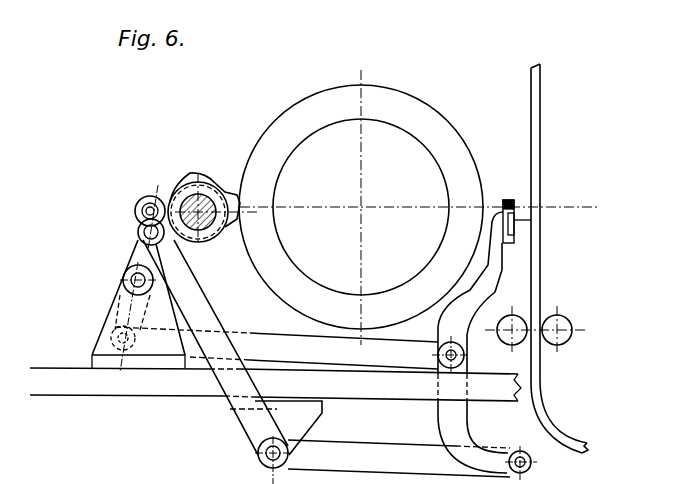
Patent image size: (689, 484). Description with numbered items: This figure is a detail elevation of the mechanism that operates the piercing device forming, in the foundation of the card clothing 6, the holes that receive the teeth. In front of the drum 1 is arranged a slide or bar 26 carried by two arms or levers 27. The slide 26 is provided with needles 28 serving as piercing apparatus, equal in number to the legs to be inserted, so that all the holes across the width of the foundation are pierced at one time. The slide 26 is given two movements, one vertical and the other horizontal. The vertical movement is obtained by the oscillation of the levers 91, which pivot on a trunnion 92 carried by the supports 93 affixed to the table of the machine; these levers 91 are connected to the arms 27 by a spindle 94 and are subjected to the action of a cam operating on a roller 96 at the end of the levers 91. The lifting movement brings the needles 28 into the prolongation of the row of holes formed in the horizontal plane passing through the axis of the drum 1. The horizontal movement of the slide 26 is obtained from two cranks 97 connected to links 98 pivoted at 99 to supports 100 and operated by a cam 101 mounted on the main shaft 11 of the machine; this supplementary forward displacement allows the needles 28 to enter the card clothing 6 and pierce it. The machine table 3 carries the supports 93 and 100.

The drum 1 is at (453, 147).
The base plate 3 is at (77, 390).
The card clothing 6 is at (538, 298).
The main shaft 11 is at (190, 195).
The slide 26 is at (509, 240).
The levers 27 is at (483, 302).
The needles 28 is at (525, 211).
The levers 91 is at (403, 450).
The trunnion 92 is at (278, 460).
The supports 93 is at (307, 424).
The spindle 94 is at (522, 452).
The roller 96 is at (138, 227).
The cranks 97 is at (263, 336).
The links 98 is at (118, 311).
The pivot 99 is at (122, 279).
The supports 100 is at (105, 337).
The cam 101 is at (195, 173).